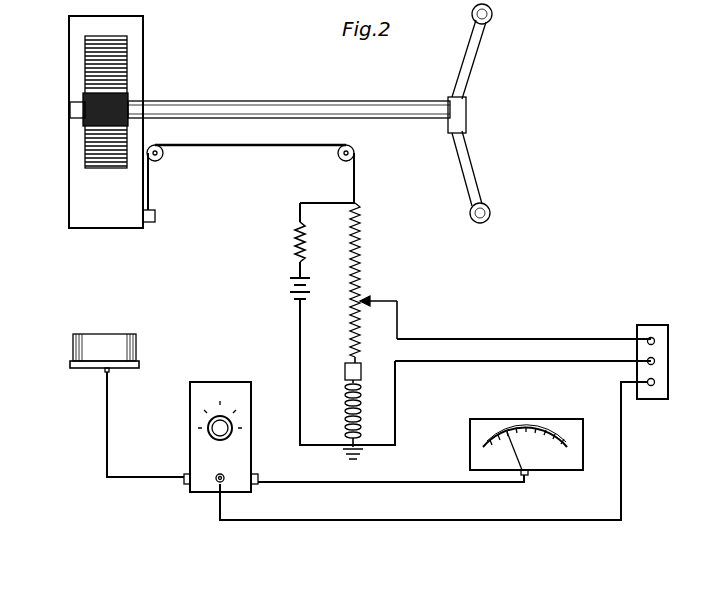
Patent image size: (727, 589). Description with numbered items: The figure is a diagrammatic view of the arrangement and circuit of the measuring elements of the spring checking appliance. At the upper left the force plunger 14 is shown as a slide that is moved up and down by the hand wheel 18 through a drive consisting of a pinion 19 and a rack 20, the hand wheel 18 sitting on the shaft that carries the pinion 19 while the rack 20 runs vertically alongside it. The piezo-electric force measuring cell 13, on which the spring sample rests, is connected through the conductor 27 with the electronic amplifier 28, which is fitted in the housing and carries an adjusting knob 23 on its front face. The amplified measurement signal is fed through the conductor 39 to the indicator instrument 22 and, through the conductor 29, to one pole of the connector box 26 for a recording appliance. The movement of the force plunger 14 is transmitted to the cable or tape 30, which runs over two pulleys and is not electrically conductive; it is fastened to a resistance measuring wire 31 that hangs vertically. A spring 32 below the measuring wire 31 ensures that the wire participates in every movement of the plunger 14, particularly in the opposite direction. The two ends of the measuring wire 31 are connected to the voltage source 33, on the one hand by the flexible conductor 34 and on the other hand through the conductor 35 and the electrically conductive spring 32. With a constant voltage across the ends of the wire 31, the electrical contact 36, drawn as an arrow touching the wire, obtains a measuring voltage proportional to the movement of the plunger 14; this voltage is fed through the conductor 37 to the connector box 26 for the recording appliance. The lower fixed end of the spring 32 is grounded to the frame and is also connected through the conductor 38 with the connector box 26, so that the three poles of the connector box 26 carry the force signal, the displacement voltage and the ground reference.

The piezo-electric force measuring cell 13 is at (75, 346).
The force plunger 14 is at (78, 207).
The hand wheel 18 is at (470, 65).
The pinion 19 is at (88, 130).
The rack 20 is at (95, 58).
The indicator instrument 22 is at (563, 423).
The adjusting knob 23 is at (210, 436).
The connector box 26 is at (650, 330).
The conductor 27 is at (106, 422).
The electronic amplifier 28 is at (203, 390).
The conductor 29 is at (577, 518).
The cable or tape 30 is at (222, 148).
The resistance measuring wire 31 is at (360, 232).
The spring 32 is at (347, 408).
The voltage source 33 is at (291, 279).
The flexible conductor 34 is at (313, 202).
The conductor 35 is at (298, 360).
The electrical contact 36 is at (397, 298).
The conductor 37 is at (517, 338).
The conductor 38 is at (496, 362).
The conductor 39 is at (383, 482).